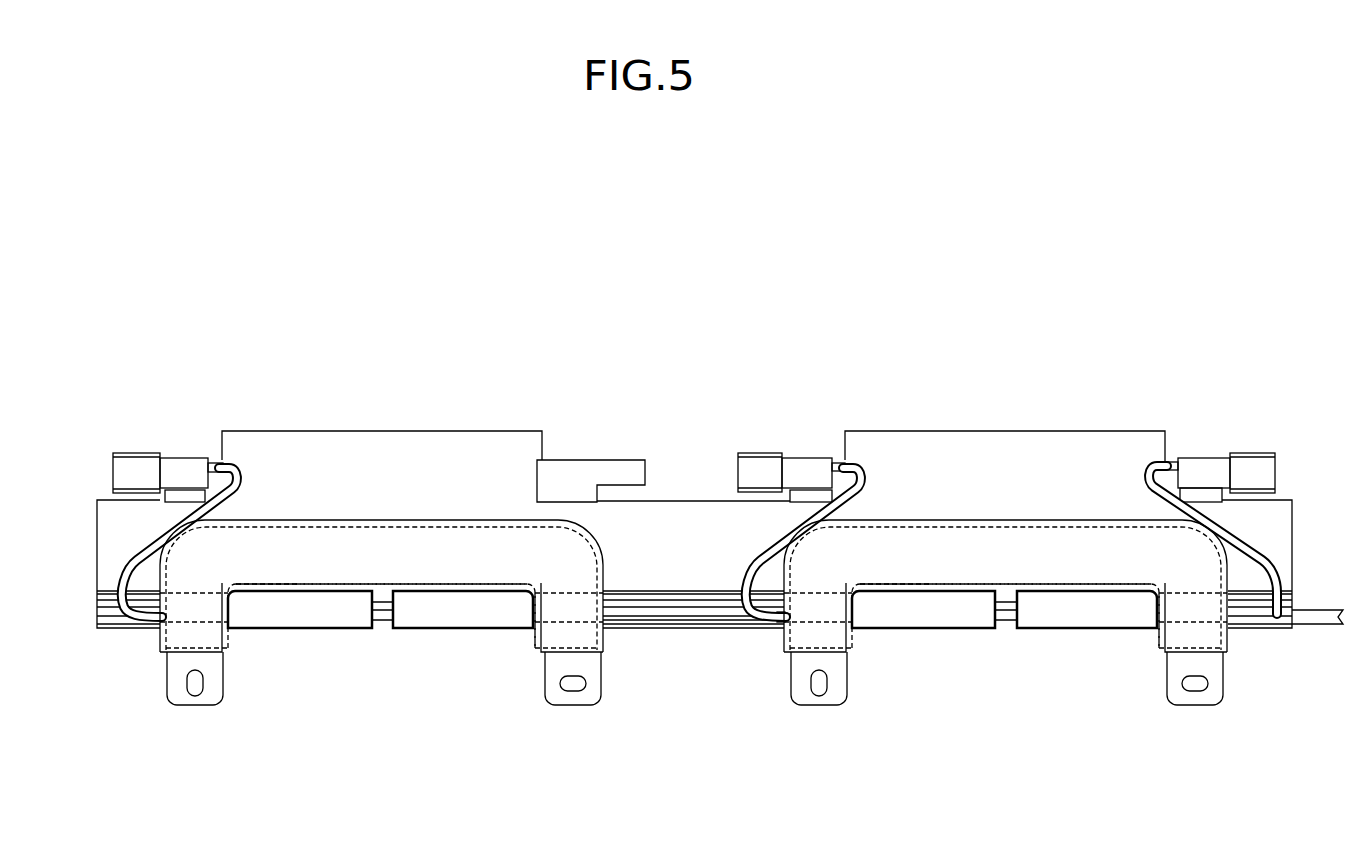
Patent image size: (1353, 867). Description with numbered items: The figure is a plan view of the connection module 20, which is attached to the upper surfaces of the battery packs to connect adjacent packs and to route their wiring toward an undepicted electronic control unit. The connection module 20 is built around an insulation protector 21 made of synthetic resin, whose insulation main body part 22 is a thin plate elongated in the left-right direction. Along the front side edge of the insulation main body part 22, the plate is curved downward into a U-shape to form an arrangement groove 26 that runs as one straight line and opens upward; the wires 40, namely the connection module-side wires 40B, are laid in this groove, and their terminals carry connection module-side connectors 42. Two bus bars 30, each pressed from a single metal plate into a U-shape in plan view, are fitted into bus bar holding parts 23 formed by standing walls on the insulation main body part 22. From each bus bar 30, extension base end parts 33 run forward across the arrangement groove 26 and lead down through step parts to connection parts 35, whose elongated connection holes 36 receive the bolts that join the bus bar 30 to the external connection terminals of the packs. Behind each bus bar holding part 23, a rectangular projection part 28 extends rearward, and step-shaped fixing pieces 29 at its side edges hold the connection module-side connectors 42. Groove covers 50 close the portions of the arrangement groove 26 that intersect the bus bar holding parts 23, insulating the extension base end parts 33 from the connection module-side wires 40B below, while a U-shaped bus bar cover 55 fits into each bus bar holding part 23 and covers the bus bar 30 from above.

The connection module 20 is at (1048, 312).
The insulation protector 21 is at (92, 545).
The insulation main body part 22 is at (688, 510).
The bus bar holding part 23 is at (298, 582).
The arrangement groove 26 is at (672, 598).
The projection part 28 is at (400, 450).
The fixing piece 29 is at (571, 470).
The bus bar 30 is at (455, 567).
The extension base end part 33 is at (553, 608).
The connection part 35 is at (1215, 684).
The connection hole 36 is at (1190, 688).
The wire 40 is at (725, 618).
The connection module-side wire 40B is at (237, 482).
The connection module-side connector 42 is at (133, 455).
The groove cover 50 is at (343, 620).
The bus bar cover 55 is at (350, 545).